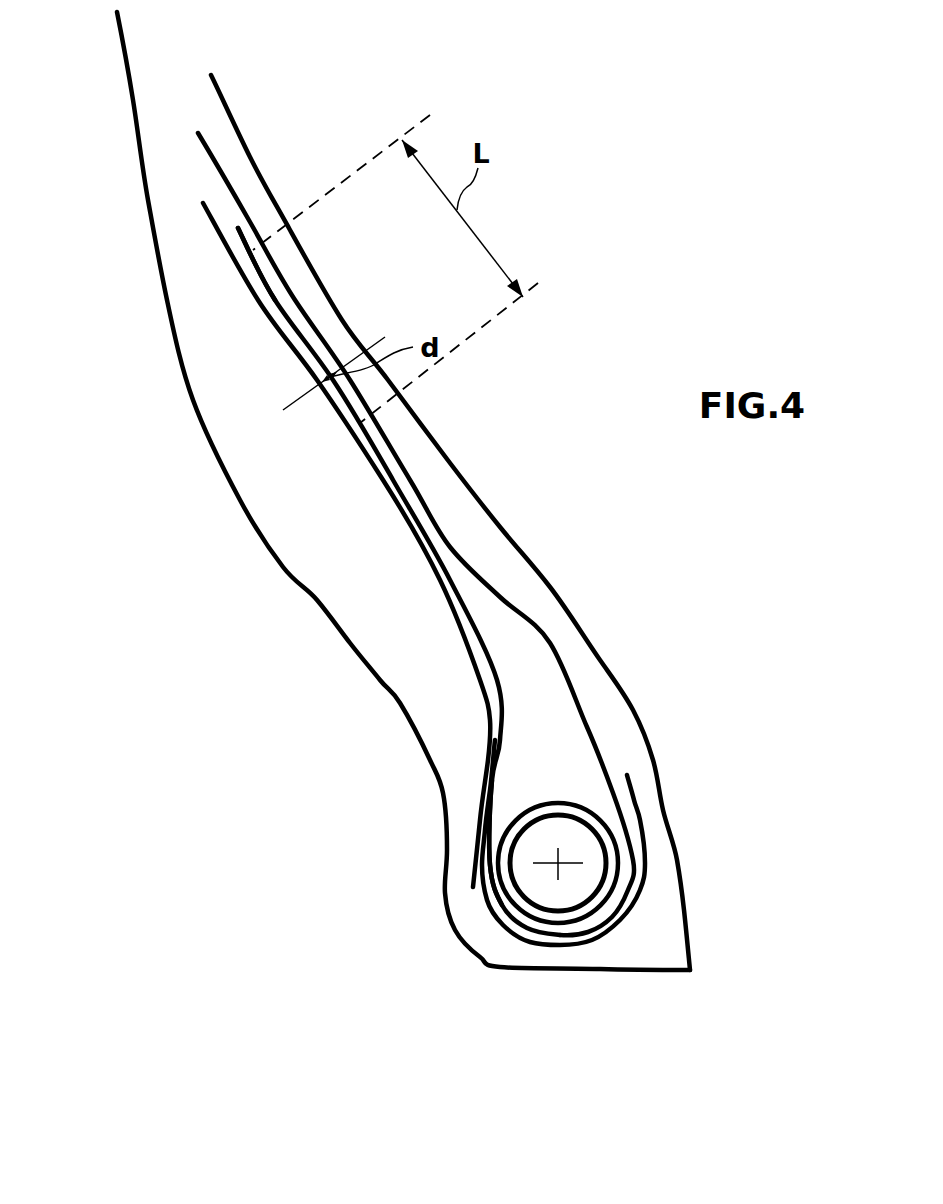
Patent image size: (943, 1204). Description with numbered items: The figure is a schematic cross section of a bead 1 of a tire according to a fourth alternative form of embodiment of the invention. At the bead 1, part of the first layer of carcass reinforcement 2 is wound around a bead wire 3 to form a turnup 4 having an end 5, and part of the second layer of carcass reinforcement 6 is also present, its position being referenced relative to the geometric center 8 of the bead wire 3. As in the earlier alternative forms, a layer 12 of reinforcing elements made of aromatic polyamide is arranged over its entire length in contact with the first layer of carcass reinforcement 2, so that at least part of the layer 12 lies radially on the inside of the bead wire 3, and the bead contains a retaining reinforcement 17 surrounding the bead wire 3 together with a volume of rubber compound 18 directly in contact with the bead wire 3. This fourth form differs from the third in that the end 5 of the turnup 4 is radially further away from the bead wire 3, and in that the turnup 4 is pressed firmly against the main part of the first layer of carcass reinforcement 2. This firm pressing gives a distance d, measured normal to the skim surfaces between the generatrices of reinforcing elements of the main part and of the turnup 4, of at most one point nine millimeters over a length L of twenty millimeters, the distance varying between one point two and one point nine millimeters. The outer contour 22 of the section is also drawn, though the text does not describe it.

The bead 1 is at (727, 984).
The first layer of carcass reinforcement 2 is at (313, 323).
The bead wire 3 is at (570, 885).
The turnup 4 is at (397, 480).
The end 5 is at (238, 230).
The second layer of carcass reinforcement 6 is at (268, 320).
The geometric center 8 is at (575, 862).
The layer of reinforcing elements made of aromatic polyamide 12 is at (527, 943).
The retaining reinforcement 17 is at (580, 803).
The volume of rubber compound 18 is at (507, 887).
The outer sidewall surface 22 is at (437, 863).